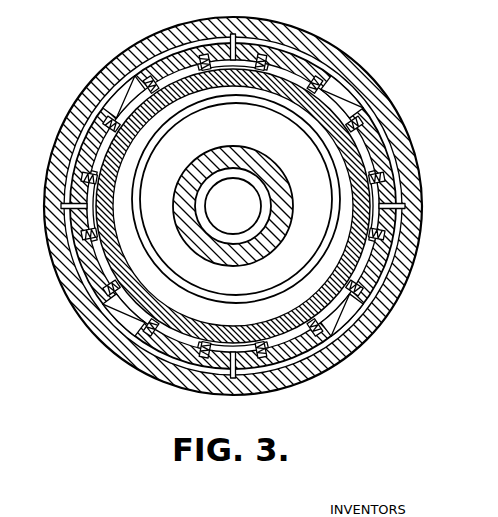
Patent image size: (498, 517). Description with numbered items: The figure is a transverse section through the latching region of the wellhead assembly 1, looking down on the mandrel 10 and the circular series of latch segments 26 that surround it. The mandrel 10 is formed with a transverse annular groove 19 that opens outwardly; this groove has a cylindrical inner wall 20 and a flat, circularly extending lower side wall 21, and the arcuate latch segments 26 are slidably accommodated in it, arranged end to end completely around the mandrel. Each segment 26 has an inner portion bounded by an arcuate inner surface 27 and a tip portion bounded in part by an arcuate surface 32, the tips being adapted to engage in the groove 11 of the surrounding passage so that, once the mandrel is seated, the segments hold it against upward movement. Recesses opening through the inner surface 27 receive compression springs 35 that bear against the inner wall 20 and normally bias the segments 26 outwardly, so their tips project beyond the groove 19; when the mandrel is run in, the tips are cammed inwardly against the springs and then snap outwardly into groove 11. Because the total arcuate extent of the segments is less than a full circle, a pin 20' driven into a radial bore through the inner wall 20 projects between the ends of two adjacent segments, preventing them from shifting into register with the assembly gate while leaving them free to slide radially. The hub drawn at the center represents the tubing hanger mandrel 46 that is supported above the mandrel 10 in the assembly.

The bearing assembly 1 is at (233, 208).
The mandrel 10 is at (112, 198).
The groove 11 is at (233, 206).
The transverse annular groove 19 is at (235, 63).
The cylindrical inner wall 20 is at (233, 95).
The pin 20' is at (236, 379).
The lower side wall 21 is at (147, 101).
The arcuate latch segments 26 is at (288, 50).
The arcuate inner surface 27 is at (360, 133).
The arcuate surface 32 is at (251, 33).
The compression springs 35 is at (347, 118).
The tubing hanger mandrel 46 is at (273, 164).